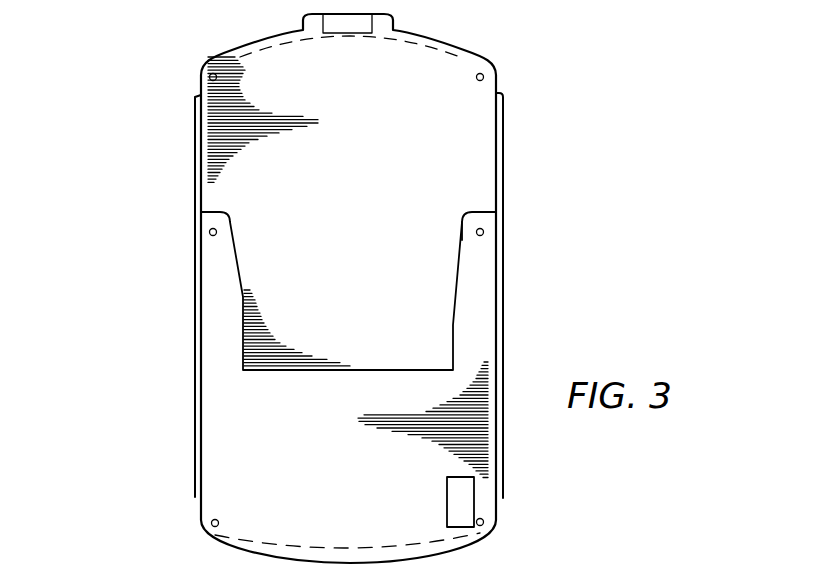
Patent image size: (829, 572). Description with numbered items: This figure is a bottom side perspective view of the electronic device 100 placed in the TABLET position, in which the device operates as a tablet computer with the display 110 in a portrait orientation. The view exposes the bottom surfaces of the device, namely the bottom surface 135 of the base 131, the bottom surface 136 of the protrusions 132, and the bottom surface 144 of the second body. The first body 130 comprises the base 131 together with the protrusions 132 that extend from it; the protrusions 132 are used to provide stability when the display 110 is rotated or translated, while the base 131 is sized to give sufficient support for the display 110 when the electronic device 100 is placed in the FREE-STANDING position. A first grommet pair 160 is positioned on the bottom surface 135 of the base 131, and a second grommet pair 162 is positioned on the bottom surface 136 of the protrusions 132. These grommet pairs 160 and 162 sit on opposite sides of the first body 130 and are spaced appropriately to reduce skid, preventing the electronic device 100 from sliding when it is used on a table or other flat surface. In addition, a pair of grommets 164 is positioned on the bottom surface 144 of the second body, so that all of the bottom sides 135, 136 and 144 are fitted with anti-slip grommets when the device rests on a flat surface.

The electronic device 100 is at (138, 140).
The display 110 is at (504, 153).
The first body 130 is at (222, 461).
The base 131 is at (402, 501).
The protrusions 132 is at (218, 308).
The bottom surface of the base 135 is at (210, 493).
The bottom surface of the protrusions 136 is at (482, 272).
The bottom surface of the second body 144 is at (470, 123).
The first grommet pair 160 is at (211, 525).
The second grommet pair 162 is at (209, 232).
The pair of grommets 164 is at (209, 77).